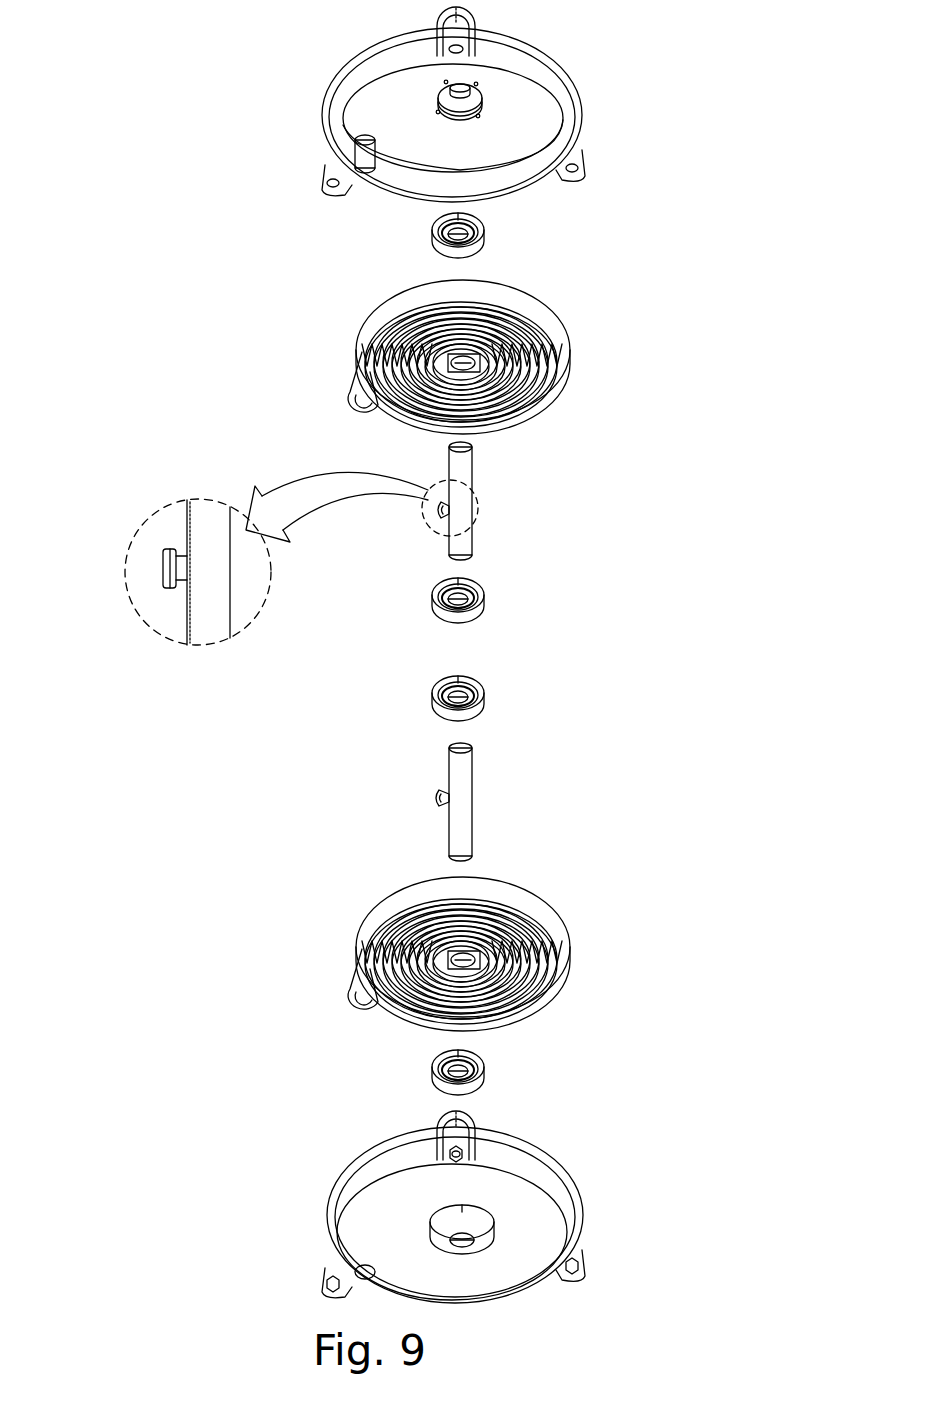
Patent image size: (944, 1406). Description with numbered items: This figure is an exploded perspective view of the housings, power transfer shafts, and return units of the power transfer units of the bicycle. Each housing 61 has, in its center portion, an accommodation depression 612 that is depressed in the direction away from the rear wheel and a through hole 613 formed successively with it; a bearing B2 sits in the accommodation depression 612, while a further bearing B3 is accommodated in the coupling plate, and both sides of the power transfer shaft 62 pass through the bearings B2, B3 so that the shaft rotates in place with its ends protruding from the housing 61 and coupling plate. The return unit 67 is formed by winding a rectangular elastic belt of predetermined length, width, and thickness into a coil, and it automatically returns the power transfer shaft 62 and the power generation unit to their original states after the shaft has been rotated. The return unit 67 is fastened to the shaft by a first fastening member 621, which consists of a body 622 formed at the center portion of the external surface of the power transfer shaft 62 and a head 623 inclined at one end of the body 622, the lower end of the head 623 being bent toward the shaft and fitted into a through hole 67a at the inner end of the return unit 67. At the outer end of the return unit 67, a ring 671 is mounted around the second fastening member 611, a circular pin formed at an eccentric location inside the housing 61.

The housing 61 is at (398, 88).
The second fastening member 611 is at (365, 148).
The accommodation depression 612 is at (492, 103).
The through hole 613 is at (470, 90).
The power transfer shaft 62 is at (462, 462).
The first fastening member 621 is at (432, 517).
The body 622 is at (178, 552).
The head 623 is at (163, 568).
The return unit 67 is at (575, 327).
The through hole 67a is at (485, 362).
The ring 671 is at (352, 378).
The bearing B2 is at (487, 229).
The bearing B3 is at (486, 587).